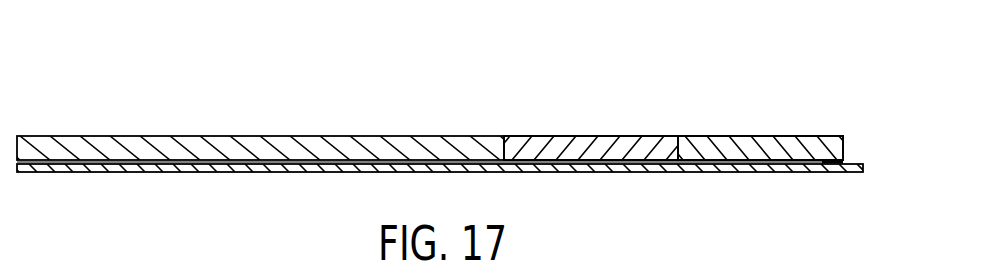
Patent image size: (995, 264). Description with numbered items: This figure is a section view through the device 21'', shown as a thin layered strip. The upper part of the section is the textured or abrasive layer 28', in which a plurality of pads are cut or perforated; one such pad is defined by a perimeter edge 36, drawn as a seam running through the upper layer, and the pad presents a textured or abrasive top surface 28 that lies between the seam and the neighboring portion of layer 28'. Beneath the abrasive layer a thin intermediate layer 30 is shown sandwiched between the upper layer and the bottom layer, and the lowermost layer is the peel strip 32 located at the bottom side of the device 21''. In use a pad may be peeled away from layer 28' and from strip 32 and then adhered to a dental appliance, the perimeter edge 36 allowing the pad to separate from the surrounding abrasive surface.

The device 21'' is at (443, 118).
The perimeter edge 36 is at (518, 124).
The textured or abrasive top surface 28 is at (588, 105).
The abrasive layer 28' is at (761, 105).
The adhesive / bonding layer 30 is at (842, 162).
The peel strip 32 is at (745, 173).